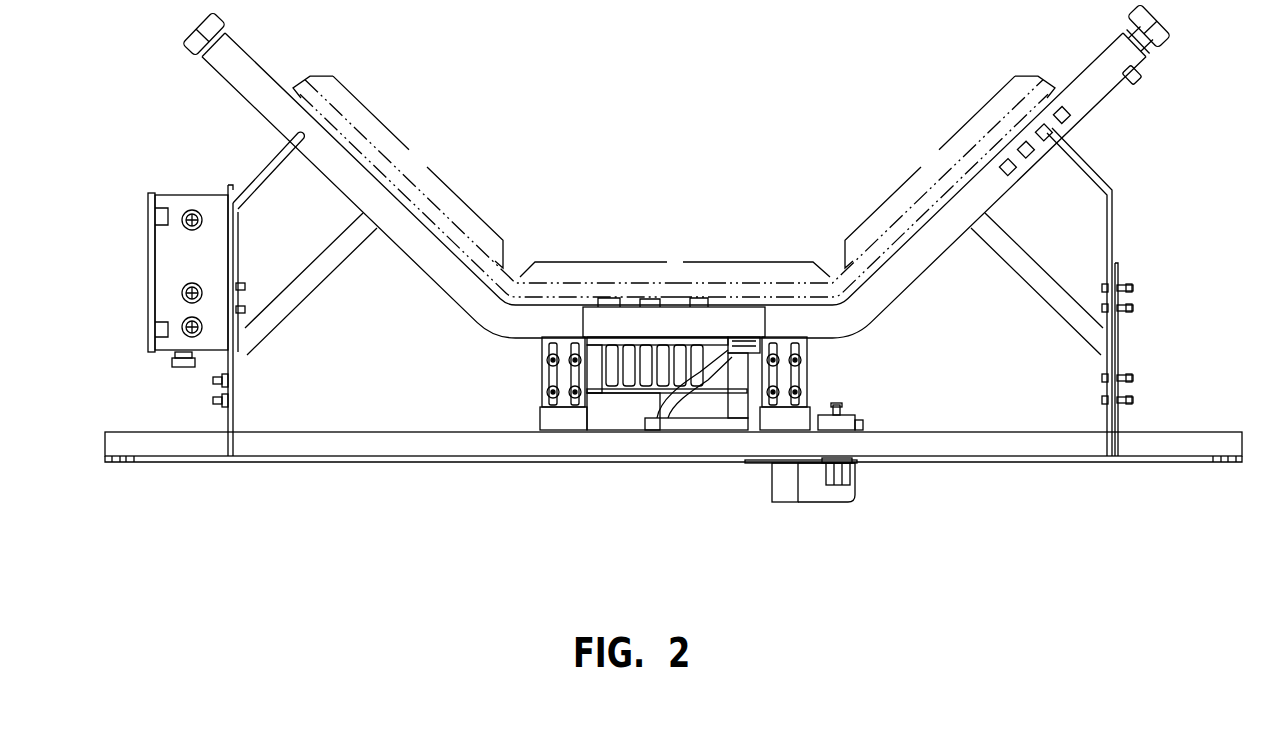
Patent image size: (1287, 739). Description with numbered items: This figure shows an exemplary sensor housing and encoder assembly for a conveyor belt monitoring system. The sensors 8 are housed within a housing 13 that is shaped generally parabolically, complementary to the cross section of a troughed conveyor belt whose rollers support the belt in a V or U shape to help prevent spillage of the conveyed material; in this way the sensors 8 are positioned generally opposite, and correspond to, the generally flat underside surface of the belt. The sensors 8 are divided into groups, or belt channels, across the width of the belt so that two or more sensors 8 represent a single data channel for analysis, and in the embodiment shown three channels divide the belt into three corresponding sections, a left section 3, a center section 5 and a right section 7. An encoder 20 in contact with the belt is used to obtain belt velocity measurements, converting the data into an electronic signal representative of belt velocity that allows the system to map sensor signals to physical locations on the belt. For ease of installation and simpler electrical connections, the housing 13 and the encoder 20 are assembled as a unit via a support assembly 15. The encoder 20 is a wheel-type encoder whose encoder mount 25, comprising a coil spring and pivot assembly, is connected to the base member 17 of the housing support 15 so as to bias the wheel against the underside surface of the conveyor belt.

The left section 3 is at (409, 150).
The center section 5 is at (683, 262).
The right section 7 is at (939, 150).
The sensors 8 is at (1022, 152).
The housing 13 is at (230, 84).
The support assembly 15 is at (1158, 343).
The base member 17 is at (378, 458).
The encoder 20 is at (632, 405).
The encoder mount 25 is at (848, 410).